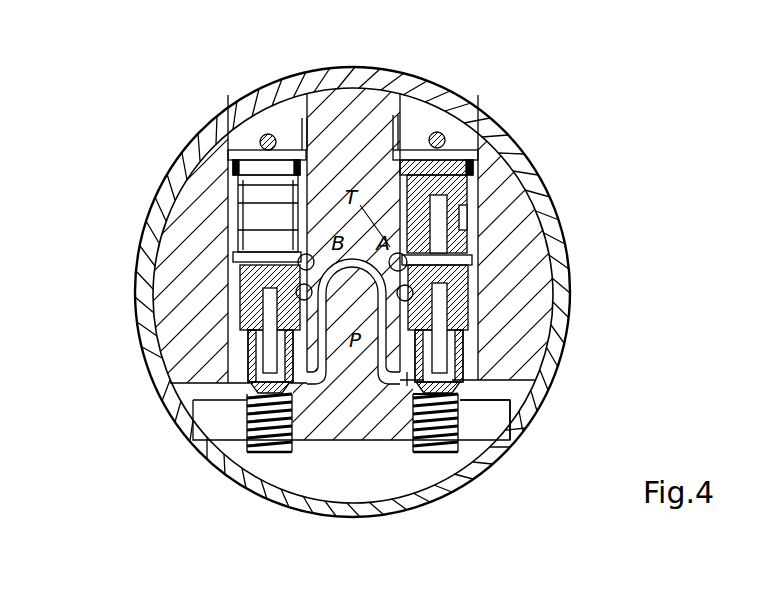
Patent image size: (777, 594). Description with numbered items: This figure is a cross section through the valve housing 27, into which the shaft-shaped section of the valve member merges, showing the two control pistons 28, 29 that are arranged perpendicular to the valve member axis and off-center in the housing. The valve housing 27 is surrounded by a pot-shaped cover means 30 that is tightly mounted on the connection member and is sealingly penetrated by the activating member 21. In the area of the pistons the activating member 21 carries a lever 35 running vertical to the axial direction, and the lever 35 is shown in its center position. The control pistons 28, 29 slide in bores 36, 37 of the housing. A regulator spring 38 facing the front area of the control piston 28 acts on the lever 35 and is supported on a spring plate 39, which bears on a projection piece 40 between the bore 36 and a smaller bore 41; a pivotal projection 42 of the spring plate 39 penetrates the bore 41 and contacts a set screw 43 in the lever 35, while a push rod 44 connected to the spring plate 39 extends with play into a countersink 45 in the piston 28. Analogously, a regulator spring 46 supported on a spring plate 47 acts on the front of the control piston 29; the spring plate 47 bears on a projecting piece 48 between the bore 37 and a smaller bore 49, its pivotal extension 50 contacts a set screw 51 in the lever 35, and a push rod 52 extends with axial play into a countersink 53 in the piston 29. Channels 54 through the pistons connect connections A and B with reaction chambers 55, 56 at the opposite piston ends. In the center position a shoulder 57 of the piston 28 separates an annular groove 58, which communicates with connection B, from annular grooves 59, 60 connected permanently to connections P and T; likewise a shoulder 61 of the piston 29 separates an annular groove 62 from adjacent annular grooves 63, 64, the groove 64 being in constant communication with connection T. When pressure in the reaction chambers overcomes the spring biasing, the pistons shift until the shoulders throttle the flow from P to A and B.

The activating member 21 is at (353, 321).
The valve housing 27 is at (330, 130).
The control piston 28 is at (238, 240).
The control piston 29 is at (462, 308).
The pot-shaped cover means 30 is at (366, 76).
The lever 35 is at (355, 410).
The bore 36 is at (231, 170).
The bore 37 is at (470, 158).
The regulator spring 38 is at (242, 315).
The spring plate 39 is at (245, 345).
The projection piece 40 is at (270, 452).
The bore 41 is at (243, 388).
The pivotal projection 42 is at (253, 397).
The set screw 43 is at (286, 440).
The push rod 44 is at (243, 300).
The countersink 45 is at (245, 285).
The regulator spring 46 is at (470, 398).
The spring plate 47 is at (440, 366).
The projecting piece 48 is at (424, 386).
The bore 49 is at (446, 405).
The pivotal extension 50 is at (448, 445).
The set screw 51 is at (426, 452).
The push rod 52 is at (465, 345).
The countersink 53 is at (462, 283).
The channels 54 is at (440, 168).
The reaction chamber 55 is at (435, 133).
The reaction chamber 56 is at (276, 150).
The shoulder 57 is at (281, 228).
The annular groove 58 is at (237, 225).
The annular groove 59 is at (240, 262).
The annular groove 60 is at (237, 205).
The shoulder 61 is at (498, 215).
The annular groove 62 is at (468, 250).
The annular groove 63 is at (462, 298).
The annular groove 64 is at (472, 178).